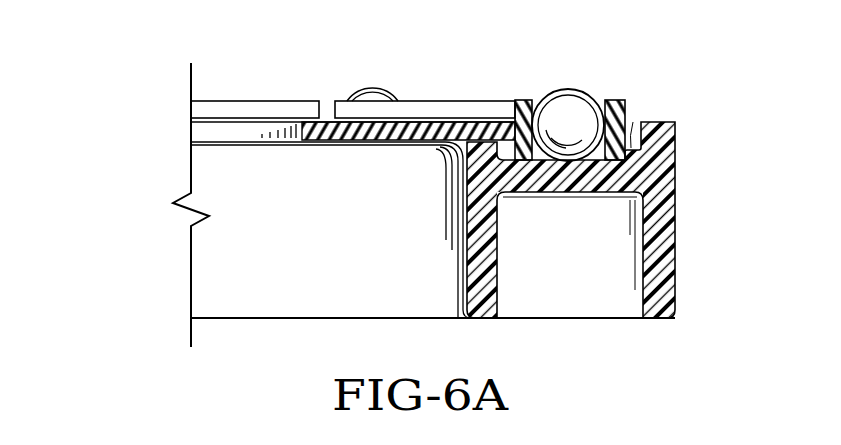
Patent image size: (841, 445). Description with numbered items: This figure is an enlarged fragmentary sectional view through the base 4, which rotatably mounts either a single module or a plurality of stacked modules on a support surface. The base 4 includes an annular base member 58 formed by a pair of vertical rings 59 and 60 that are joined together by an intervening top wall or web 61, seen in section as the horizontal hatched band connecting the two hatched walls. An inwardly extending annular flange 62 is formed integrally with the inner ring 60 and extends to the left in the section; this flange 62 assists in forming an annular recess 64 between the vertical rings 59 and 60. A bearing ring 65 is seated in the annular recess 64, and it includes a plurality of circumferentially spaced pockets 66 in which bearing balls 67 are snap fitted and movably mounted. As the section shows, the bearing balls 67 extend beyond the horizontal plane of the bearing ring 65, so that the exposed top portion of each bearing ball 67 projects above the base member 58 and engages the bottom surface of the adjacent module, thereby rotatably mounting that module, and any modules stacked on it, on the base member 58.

The base 4 is at (705, 183).
The annular base member 58 is at (688, 138).
The vertical ring 59 is at (668, 274).
The inner ring 60 is at (477, 268).
The top wall or web 61 is at (592, 185).
The annular flange 62 is at (367, 133).
The annular recess 64 is at (633, 150).
The bearing ring 65 is at (524, 92).
The pocket 66 is at (607, 142).
The bearing ball 67 is at (480, 90).